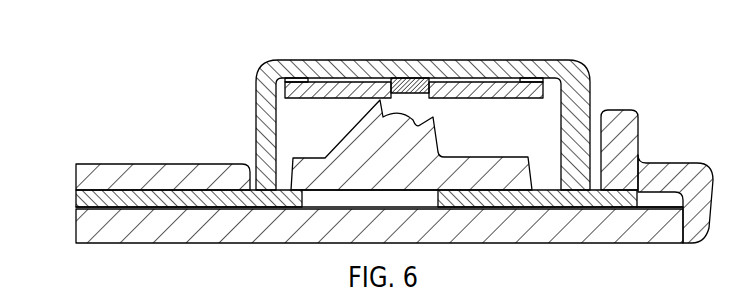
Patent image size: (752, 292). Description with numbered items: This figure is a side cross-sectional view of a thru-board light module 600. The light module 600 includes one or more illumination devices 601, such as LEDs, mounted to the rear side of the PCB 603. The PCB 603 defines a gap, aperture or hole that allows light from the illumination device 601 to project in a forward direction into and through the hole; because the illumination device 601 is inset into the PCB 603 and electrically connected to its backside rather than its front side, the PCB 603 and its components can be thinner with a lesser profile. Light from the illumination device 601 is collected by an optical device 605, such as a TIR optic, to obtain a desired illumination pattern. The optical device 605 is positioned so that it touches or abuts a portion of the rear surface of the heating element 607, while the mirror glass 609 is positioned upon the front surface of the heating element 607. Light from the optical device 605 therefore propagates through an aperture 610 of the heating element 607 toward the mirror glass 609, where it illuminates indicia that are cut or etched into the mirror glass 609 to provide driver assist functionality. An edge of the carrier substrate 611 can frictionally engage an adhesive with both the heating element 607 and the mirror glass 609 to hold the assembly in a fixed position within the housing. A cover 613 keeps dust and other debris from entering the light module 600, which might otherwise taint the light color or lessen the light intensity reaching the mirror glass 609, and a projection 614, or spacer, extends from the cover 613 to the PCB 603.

The light module 600 is at (110, 50).
The illumination device 601 is at (411, 77).
The PCB 603 is at (560, 88).
The optical device 605 is at (333, 150).
The heating element 607 is at (82, 199).
The mirror glass 609 is at (77, 225).
The aperture 610 is at (318, 198).
The carrier substrate 611 is at (622, 109).
The cover 613 is at (292, 61).
The projection 614 is at (299, 79).